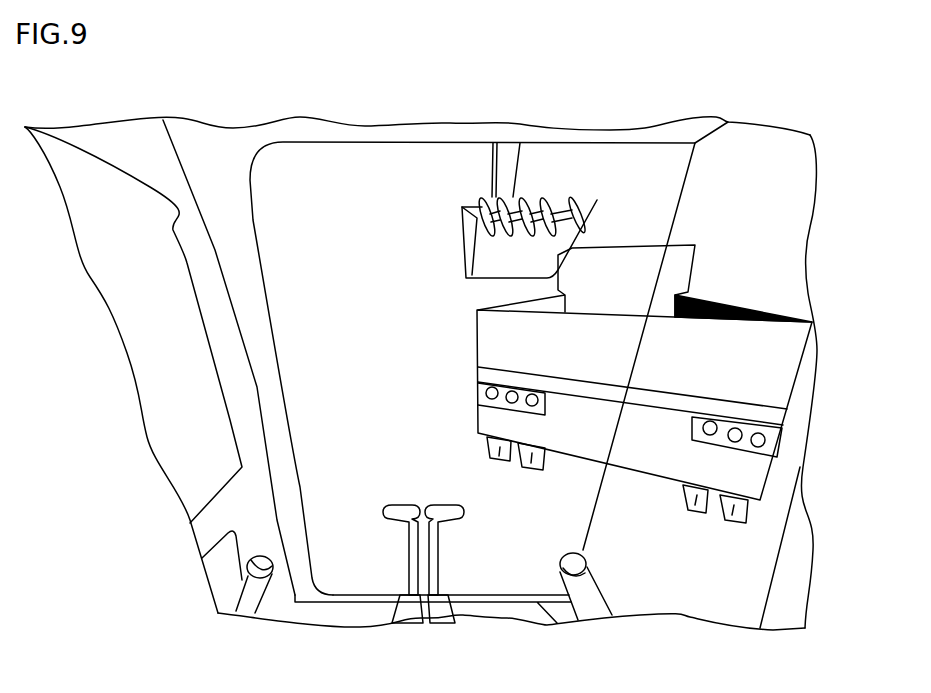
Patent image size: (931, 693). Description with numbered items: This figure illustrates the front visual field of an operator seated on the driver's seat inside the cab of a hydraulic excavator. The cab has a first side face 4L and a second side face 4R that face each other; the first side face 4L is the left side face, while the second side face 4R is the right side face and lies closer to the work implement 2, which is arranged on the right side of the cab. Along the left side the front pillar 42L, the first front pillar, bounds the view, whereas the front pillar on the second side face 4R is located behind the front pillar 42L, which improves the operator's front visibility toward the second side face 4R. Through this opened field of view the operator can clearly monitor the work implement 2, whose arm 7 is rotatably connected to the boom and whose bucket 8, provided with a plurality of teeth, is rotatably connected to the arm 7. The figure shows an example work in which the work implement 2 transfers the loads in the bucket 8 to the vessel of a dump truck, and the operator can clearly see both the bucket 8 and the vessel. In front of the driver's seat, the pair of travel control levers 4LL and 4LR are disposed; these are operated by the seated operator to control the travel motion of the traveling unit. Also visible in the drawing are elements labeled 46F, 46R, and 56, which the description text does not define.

The work implement 2 is at (484, 160).
The arm 7 is at (510, 163).
The bucket 8 is at (462, 232).
The first side face 4L is at (145, 333).
The second side face 4R is at (785, 275).
The front pillar 42L is at (202, 262).
The front panel 46F is at (366, 180).
The right panel 46R is at (785, 210).
The travel control lever 4LL is at (397, 515).
The travel control lever 4LR is at (452, 515).
The pipe 56 is at (587, 577).